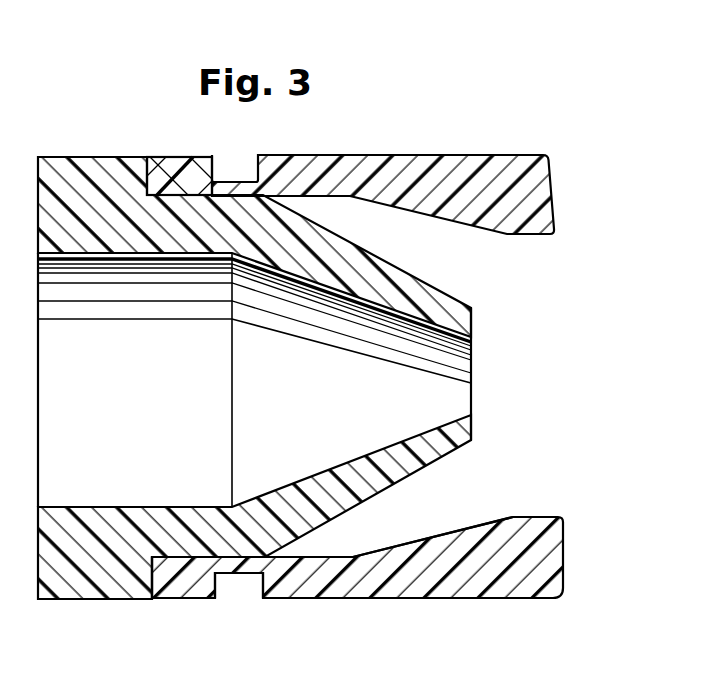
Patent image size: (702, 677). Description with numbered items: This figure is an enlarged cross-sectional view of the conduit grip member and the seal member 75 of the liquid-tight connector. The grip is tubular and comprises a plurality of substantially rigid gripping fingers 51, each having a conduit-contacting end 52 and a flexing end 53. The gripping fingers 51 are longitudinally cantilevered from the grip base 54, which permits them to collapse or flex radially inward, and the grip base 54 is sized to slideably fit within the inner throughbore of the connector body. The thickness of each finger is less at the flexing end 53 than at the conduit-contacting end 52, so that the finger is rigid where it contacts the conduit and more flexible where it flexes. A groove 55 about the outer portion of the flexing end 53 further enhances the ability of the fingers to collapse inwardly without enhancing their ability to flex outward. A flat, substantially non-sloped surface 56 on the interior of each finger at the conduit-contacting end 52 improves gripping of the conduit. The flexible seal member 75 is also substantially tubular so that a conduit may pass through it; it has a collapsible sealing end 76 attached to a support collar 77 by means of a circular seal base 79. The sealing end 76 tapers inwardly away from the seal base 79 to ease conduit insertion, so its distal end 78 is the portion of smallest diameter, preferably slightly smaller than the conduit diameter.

The gripping fingers 51 is at (500, 140).
The conduit-contacting end 52 is at (545, 562).
The flexing end 53 is at (257, 565).
The grip base 54 is at (180, 588).
The groove 55 is at (230, 588).
The flat, substantially non-sloped surface 56 is at (532, 517).
The seal member 75 is at (548, 266).
The sealing end 76 is at (392, 470).
The support collar 77 is at (85, 172).
The distal end 78 is at (474, 329).
The seal base 79 is at (207, 210).